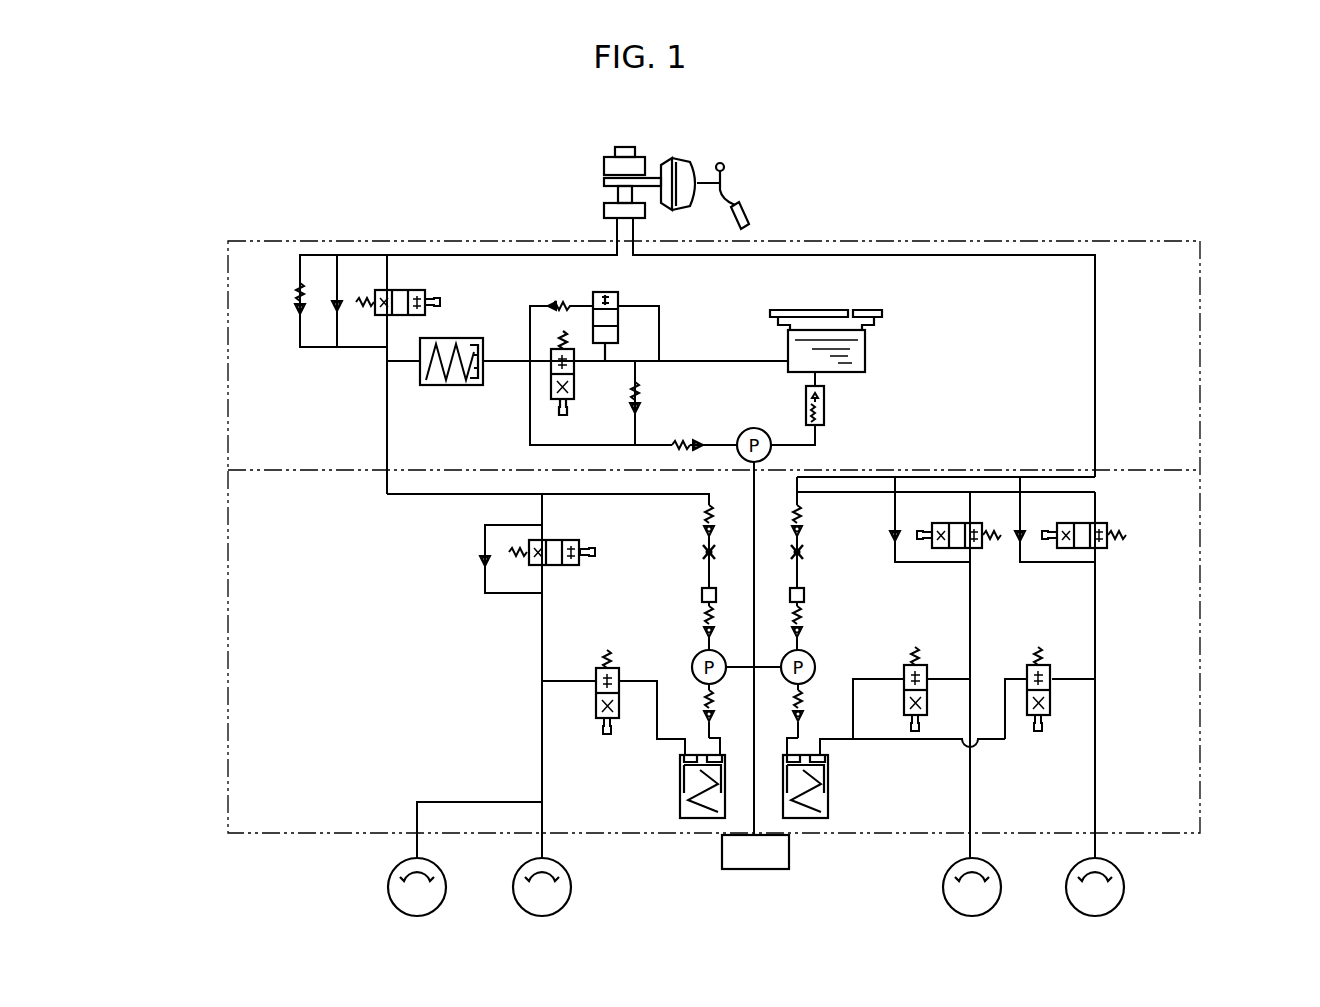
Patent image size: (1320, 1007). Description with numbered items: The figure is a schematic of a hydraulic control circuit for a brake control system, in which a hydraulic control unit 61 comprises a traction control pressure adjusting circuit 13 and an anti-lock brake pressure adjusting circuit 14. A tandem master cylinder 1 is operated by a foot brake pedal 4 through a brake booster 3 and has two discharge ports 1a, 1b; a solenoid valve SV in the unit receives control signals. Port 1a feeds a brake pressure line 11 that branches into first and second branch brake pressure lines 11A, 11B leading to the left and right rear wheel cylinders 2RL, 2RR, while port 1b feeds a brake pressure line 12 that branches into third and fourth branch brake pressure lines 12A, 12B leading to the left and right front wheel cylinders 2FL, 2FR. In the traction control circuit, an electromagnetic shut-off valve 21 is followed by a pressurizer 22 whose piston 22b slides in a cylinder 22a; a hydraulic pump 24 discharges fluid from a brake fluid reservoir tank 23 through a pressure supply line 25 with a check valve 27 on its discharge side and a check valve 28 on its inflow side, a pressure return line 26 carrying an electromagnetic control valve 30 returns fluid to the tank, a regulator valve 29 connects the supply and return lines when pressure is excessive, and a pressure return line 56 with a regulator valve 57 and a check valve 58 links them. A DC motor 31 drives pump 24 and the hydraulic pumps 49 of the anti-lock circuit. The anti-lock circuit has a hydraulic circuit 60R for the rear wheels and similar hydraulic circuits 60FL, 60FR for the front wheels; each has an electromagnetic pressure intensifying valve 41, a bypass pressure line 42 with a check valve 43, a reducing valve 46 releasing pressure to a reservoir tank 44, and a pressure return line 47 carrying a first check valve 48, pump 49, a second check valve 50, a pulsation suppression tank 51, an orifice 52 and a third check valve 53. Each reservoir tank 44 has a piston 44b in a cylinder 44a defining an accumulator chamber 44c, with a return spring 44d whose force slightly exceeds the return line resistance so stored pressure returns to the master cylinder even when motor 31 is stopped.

The master cylinder 1 is at (633, 175).
The discharge port 1a is at (615, 230).
The discharge port 1b is at (640, 230).
The brake booster 3 is at (684, 160).
The foot brake pedal 4 is at (740, 214).
The solenoid valve SV is at (603, 208).
The brake pressure line 11 is at (473, 253).
The first branch brake pressure line 11A is at (437, 801).
The second branch brake pressure line 11B is at (540, 783).
The brake pressure line 12 is at (823, 253).
The third branch brake pressure line 12A is at (971, 823).
The fourth branch brake pressure line 12B is at (1098, 822).
The traction control pressure adjusting circuit 13 is at (1200, 370).
The anti-lock brake pressure adjusting circuit 14 is at (1200, 700).
The electromagnetic shut-off valve 21 is at (432, 291).
The pressurizer 22 is at (460, 359).
The cylinder 22a is at (437, 375).
The piston 22b is at (453, 338).
The brake fluid reservoir tank 23 is at (870, 338).
The hydraulic pump 24 is at (765, 432).
The pressure supply line 25 is at (526, 446).
The pressure return line 26 is at (705, 359).
The check valve 27 is at (698, 438).
The check valve 28 is at (828, 416).
The regulator valve 29 is at (640, 409).
The electromagnetic control valve 30 is at (578, 398).
The DC motor 31 is at (723, 868).
The electromagnetic pressure intensifying valve 41 is at (577, 568).
The bypass pressure line 42 is at (526, 595).
The check valve 43 is at (483, 552).
The reservoir tank 44 is at (680, 787).
The cylinder 44a is at (683, 802).
The piston 44b is at (681, 764).
The accumulator chamber 44c is at (722, 748).
The return spring 44d is at (693, 816).
The reducing valve 46 is at (602, 665).
The pressure return line 47 is at (622, 495).
The first check valve 48 is at (704, 718).
The hydraulic pump 49 is at (696, 654).
The second check valve 50 is at (713, 630).
The pulsation suppression tank 51 is at (702, 597).
The orifice 52 is at (701, 553).
The third check valve 53 is at (700, 521).
The pressure return line 56 is at (615, 355).
The regulator valve 57 is at (620, 296).
The check valve 58 is at (556, 303).
The hydraulic circuit 60R is at (560, 735).
The hydraulic circuit 60FL is at (955, 492).
The hydraulic circuit 60FR is at (1068, 505).
The hydraulic control unit 61 is at (208, 375).
The left rear wheel cylinder 2RL is at (417, 887).
The right rear wheel cylinder 2RR is at (542, 887).
The left front wheel cylinder 2FL is at (972, 887).
The right front wheel cylinder 2FR is at (1095, 887).